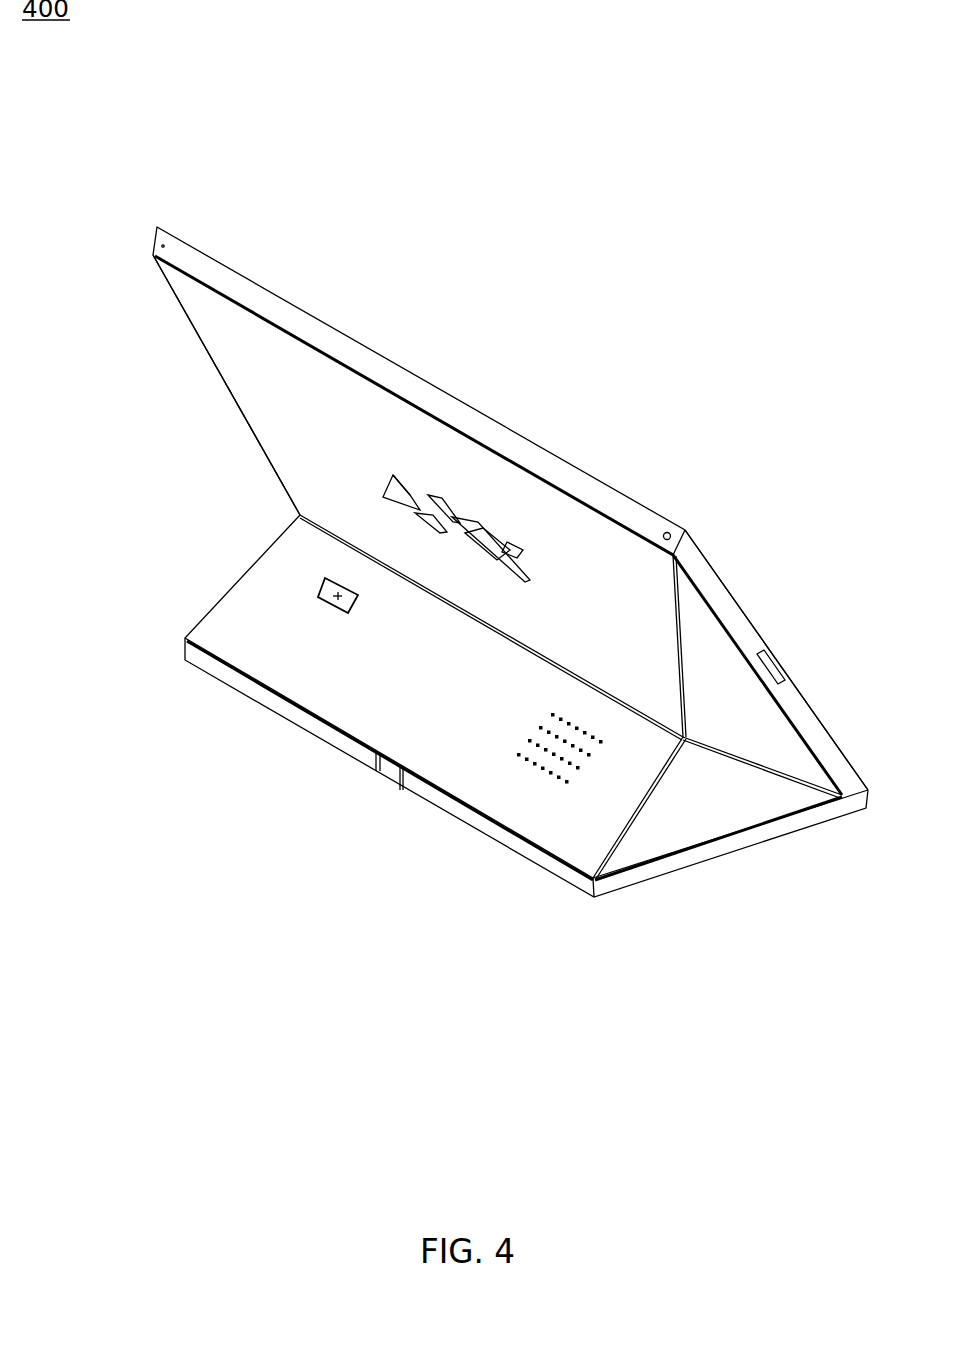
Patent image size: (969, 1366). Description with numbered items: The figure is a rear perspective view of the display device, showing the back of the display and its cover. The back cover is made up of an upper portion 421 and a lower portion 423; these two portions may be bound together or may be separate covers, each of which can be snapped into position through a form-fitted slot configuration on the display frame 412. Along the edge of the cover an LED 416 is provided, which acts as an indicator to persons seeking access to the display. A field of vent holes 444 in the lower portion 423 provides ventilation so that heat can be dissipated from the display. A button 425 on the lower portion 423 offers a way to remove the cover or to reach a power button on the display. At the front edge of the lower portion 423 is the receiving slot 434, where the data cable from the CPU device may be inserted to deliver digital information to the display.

The display frame 412 is at (468, 418).
The LED 416 is at (777, 668).
The upper portion 421 is at (260, 383).
The lower portion 423 is at (243, 650).
The button 425 is at (327, 596).
The receiving slot 434 is at (378, 765).
The vent holes 444 is at (553, 712).